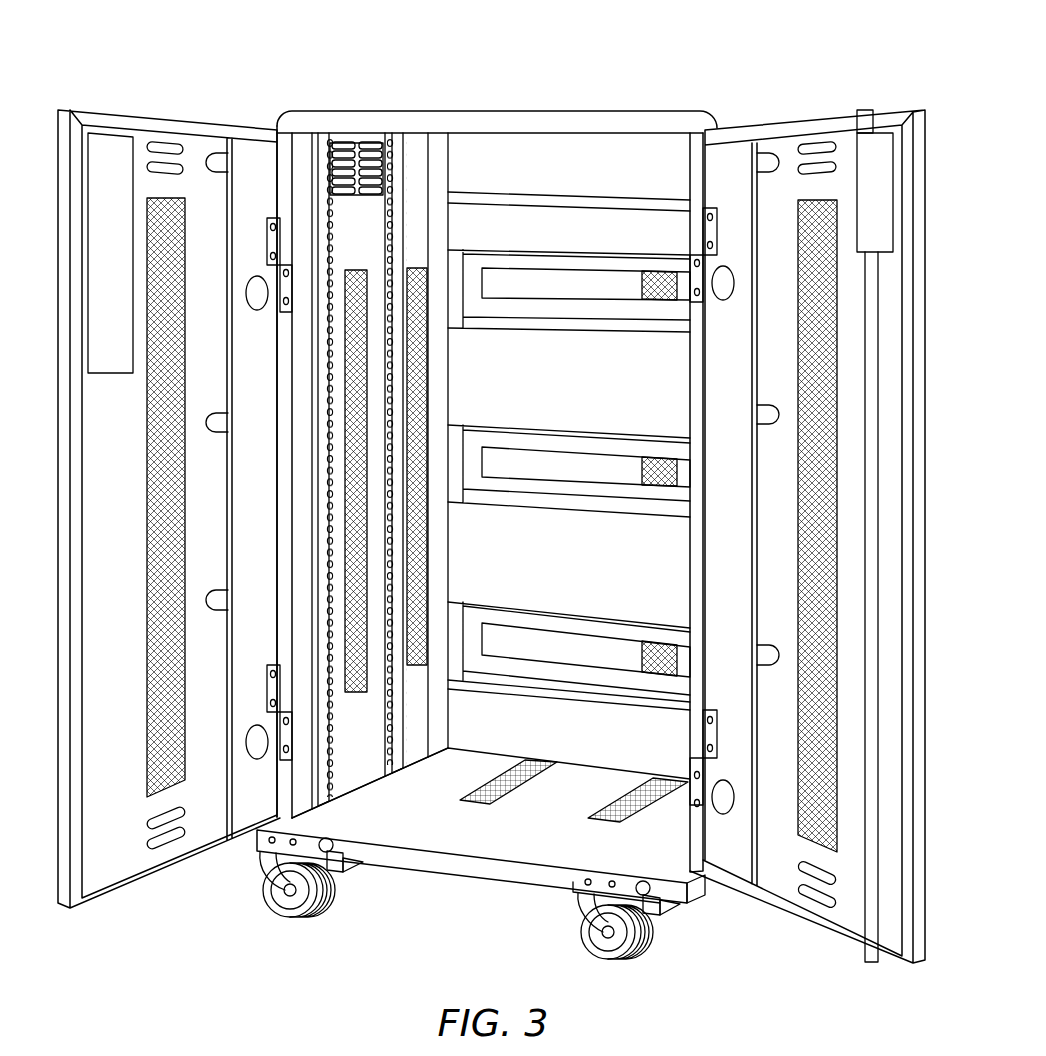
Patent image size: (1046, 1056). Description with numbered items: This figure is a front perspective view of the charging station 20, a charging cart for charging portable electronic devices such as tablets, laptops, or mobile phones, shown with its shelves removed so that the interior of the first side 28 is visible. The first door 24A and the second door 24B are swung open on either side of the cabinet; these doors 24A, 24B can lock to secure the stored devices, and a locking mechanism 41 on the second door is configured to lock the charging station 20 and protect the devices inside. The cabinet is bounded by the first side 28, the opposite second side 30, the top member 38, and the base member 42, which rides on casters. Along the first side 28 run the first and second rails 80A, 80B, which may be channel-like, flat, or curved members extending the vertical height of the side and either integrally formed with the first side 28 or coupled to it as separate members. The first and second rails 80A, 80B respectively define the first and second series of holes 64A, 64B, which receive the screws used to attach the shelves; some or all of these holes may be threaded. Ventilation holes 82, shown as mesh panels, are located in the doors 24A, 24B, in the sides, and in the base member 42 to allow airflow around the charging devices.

The charging station 20 is at (270, 58).
The first door 24A is at (120, 850).
The second door 24B is at (807, 536).
The first side 28 is at (387, 755).
The second side 30 is at (690, 385).
The top member 38 is at (514, 110).
The locking mechanism 41 is at (870, 187).
The base member 42 is at (468, 863).
The first series of holes 64A is at (320, 432).
The second series of holes 64B is at (403, 207).
The first rail 80A is at (358, 757).
The second rail 80B is at (403, 735).
The ventilation holes 82 is at (150, 497).